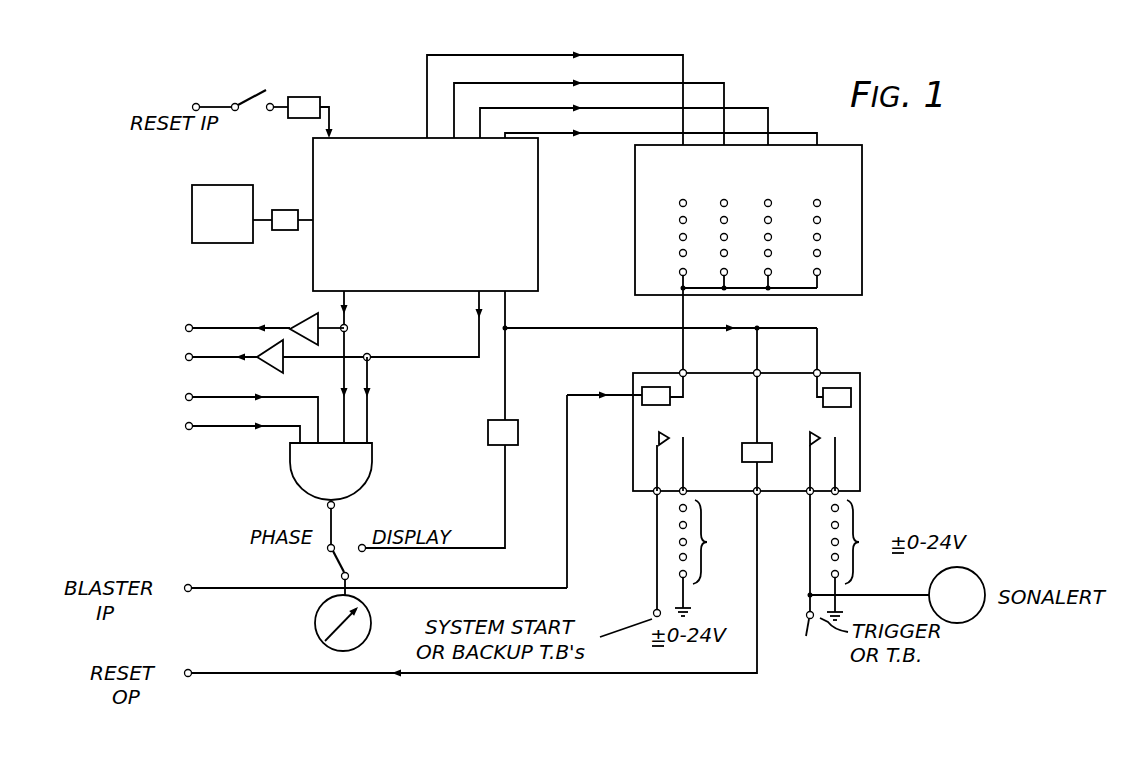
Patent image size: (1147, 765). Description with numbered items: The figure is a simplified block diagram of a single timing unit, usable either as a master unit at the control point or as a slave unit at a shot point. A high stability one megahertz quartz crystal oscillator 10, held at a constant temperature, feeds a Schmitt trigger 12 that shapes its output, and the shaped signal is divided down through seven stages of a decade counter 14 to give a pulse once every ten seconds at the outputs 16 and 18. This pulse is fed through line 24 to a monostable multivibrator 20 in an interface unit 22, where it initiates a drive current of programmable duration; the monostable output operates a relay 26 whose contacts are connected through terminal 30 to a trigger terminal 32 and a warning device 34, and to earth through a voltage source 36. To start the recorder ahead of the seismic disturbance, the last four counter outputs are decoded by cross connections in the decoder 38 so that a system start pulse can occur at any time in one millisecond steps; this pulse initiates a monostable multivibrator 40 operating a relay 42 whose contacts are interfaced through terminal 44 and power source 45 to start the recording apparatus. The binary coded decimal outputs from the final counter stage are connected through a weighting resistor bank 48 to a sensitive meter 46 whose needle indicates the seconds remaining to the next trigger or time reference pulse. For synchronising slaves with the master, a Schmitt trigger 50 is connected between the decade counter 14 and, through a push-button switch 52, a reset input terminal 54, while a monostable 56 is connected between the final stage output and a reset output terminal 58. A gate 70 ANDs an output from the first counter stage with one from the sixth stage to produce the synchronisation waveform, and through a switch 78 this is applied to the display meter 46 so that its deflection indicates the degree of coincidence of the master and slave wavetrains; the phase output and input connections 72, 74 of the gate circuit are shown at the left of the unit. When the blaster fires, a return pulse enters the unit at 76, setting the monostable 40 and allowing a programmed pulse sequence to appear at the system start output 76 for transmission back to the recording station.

The quartz crystal oscillator 10 is at (222, 214).
The Schmitt trigger 12 is at (282, 210).
The decade counter 14 is at (538, 226).
The counter output 16 is at (509, 314).
The counter output 18 is at (558, 138).
The monostable multivibrator 20 is at (838, 388).
The interface unit 22 is at (860, 406).
The line 24 is at (610, 328).
The relay 26 is at (826, 465).
The terminal 30 is at (840, 493).
The trigger terminal 32 is at (805, 578).
The warning device 34 is at (897, 595).
The voltage source 36 is at (856, 560).
The decoder 38 is at (862, 188).
The monostable multivibrator 40 is at (651, 387).
The relay 42 is at (668, 465).
The terminal 44 is at (654, 613).
The power source 45 is at (698, 625).
The meter 46 is at (315, 630).
The resistor bank 48 is at (488, 433).
The Schmitt trigger 50 is at (301, 104).
The push-button switch 52 is at (254, 94).
The reset input terminal 54 is at (192, 107).
The monostable 56 is at (736, 448).
The reset output terminal 58 is at (191, 668).
The gate 70 is at (288, 470).
The phase output terminals 72 is at (185, 354).
The phase input terminals 74 is at (185, 424).
The system start output 76 is at (192, 584).
The switch 78 is at (335, 566).